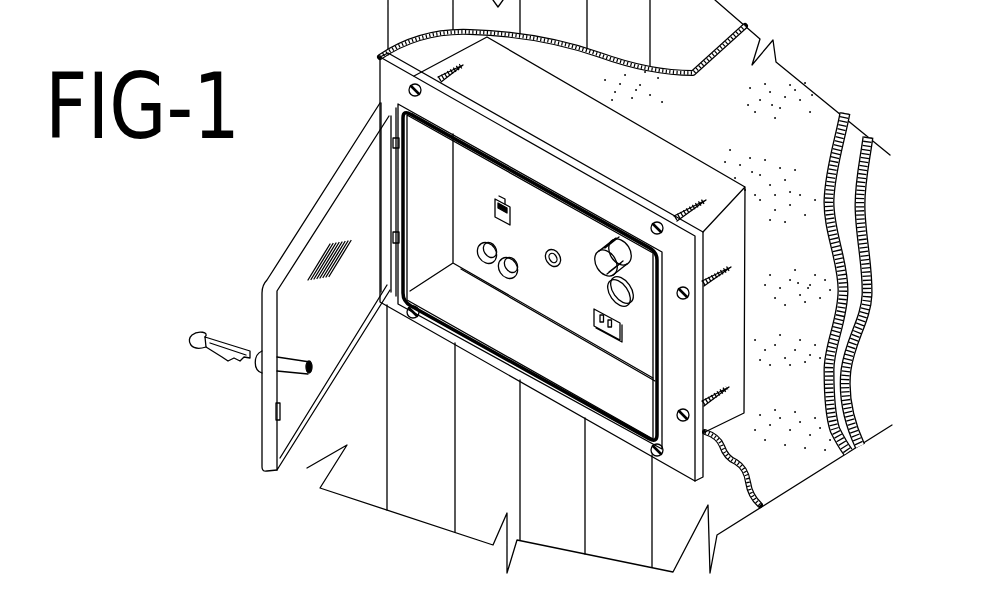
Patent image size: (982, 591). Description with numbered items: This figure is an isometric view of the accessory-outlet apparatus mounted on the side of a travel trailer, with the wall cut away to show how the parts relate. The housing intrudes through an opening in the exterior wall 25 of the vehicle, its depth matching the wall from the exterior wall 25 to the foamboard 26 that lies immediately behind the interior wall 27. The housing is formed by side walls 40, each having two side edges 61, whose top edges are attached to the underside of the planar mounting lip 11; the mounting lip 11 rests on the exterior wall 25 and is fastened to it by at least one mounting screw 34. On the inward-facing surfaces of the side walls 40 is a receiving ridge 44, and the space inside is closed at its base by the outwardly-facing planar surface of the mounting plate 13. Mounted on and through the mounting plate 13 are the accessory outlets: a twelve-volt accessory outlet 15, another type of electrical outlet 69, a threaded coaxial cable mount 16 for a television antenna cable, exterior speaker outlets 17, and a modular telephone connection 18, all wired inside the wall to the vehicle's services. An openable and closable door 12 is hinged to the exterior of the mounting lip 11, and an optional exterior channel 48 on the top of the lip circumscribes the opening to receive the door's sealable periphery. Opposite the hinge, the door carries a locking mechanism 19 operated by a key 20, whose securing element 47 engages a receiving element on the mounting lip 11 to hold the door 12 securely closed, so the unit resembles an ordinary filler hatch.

The mounting lip 11 is at (622, 433).
The openable and closable door 12 is at (320, 315).
The mounting plate 13 is at (538, 234).
The twelve-volt accessory outlet 15 is at (598, 268).
The threaded coaxial cable mount 16 is at (548, 266).
The exterior speaker outlets 17 is at (500, 275).
The modular telephone connection 18 is at (493, 200).
The locking mechanism 19 is at (311, 363).
The key 20 is at (192, 342).
The exterior wall 25 is at (627, 30).
The foamboard 26 is at (746, 134).
The interior wall 27 is at (864, 206).
The mounting screw 34 is at (463, 68).
The side walls 40 is at (531, 125).
The receiving ridge 44 is at (540, 313).
The securing element 47 is at (275, 417).
The exterior channel 48 is at (457, 133).
The side edges 61 is at (452, 56).
The electrical outlet 69 is at (597, 333).